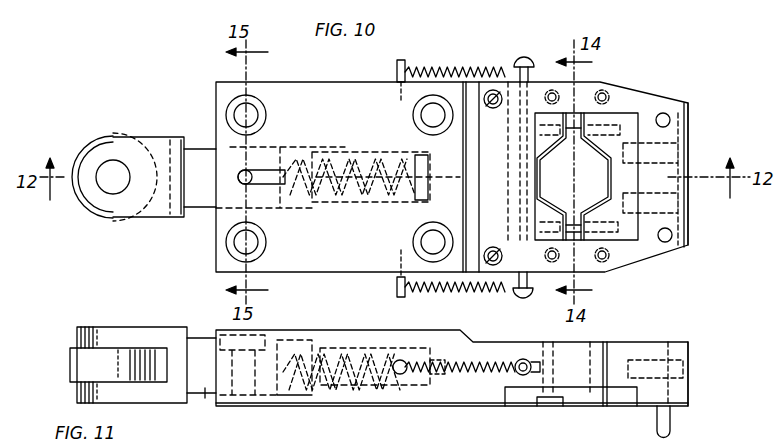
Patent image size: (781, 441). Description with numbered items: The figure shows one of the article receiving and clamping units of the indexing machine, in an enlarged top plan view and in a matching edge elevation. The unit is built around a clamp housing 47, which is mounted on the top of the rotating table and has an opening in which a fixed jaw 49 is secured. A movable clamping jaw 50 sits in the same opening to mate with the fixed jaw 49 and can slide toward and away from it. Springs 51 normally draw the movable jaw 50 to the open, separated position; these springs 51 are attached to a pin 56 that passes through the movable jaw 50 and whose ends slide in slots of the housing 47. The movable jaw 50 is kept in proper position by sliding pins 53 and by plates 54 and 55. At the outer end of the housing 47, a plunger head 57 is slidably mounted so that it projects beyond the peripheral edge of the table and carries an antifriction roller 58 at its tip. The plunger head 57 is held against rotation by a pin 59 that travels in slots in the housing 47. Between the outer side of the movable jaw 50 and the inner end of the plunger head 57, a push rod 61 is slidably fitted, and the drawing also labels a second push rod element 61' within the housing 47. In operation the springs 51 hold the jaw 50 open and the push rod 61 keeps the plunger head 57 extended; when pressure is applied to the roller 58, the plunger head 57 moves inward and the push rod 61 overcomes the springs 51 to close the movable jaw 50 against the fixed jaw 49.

In FIG. 10, the clamp housing 47 is at (673, 124).
In FIG. 11, the clamp housing 47 is at (688, 396).
In FIG. 10, the fixed jaw 49 is at (638, 125).
In FIG. 10, the movable clamping jaw 50 is at (552, 153).
In FIG. 10, the spring 51 is at (448, 290).
In FIG. 11, the spring 51 is at (468, 375).
In FIG. 10, the sliding pin 53 is at (576, 220).
In FIG. 11, the plate 54 is at (578, 400).
In FIG. 10, the plate 55 is at (533, 262).
In FIG. 10, the pin 56 is at (514, 60).
In FIG. 11, the pin 56 is at (521, 358).
In FIG. 10, the plunger head 57 is at (196, 146).
In FIG. 11, the plunger head 57 is at (203, 402).
In FIG. 10, the antifriction roller 58 is at (95, 146).
In FIG. 11, the antifriction roller 58 is at (80, 358).
In FIG. 10, the pin 59 is at (258, 168).
In FIG. 10, the push rod 61 is at (434, 167).
In FIG. 11, the push rod 61 is at (465, 347).
In FIG. 10, the compression spring 61' is at (349, 160).
In FIG. 11, the compression spring 61' is at (341, 347).